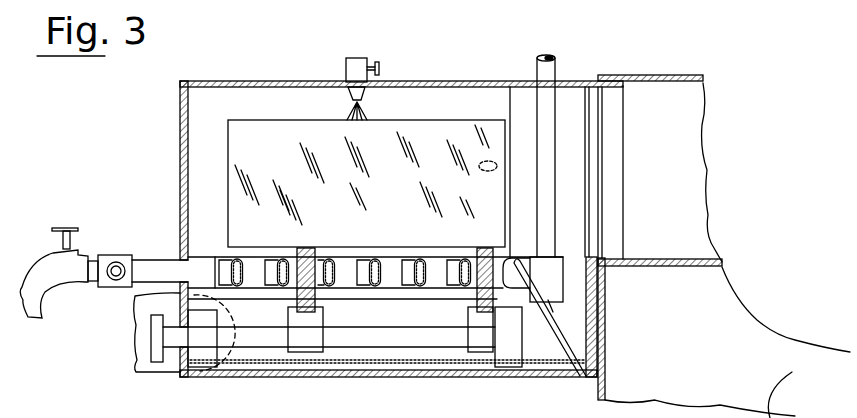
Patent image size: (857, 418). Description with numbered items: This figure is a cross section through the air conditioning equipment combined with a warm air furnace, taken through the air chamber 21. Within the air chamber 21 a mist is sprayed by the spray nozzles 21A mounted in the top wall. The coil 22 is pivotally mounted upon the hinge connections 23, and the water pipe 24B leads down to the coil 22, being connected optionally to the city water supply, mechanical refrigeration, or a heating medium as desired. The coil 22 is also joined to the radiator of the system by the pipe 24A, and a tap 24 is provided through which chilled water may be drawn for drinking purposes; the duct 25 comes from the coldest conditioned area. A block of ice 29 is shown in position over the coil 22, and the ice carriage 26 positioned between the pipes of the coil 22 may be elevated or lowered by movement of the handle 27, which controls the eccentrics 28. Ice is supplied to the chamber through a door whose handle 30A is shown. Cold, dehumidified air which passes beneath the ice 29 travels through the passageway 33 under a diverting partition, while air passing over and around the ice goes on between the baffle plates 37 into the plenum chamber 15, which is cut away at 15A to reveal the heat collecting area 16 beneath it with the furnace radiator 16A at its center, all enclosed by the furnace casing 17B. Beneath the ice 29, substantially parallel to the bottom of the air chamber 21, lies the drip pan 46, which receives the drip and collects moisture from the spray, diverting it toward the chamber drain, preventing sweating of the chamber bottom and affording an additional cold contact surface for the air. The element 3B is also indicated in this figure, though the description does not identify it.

The plenum chamber 15 is at (690, 172).
The cut-away of plenum chamber 15A is at (723, 267).
The heat collecting area 16 is at (727, 341).
The furnace radiator 16A is at (787, 395).
The furnace casing 17B is at (605, 358).
The air chamber 21 is at (441, 226).
The spray nozzles 21A is at (348, 90).
The coil 22 is at (228, 260).
The hinge connections 23 is at (200, 266).
The tap 24 is at (43, 292).
The pipe 24A is at (114, 280).
The connecting pipe 24B is at (554, 63).
The duct 25 is at (323, 333).
The ice carriage 26 is at (306, 250).
The handle 27 is at (157, 343).
The eccentrics 28 is at (307, 343).
The block of ice 29 is at (366, 183).
The handle of door 30A is at (481, 171).
The passageway 33 is at (550, 317).
The baffle plates 37 is at (617, 193).
The outlet 3B is at (553, 312).
The drip pan 46 is at (387, 366).